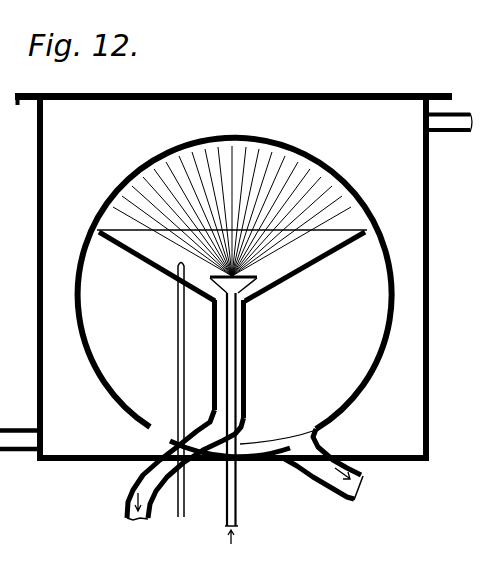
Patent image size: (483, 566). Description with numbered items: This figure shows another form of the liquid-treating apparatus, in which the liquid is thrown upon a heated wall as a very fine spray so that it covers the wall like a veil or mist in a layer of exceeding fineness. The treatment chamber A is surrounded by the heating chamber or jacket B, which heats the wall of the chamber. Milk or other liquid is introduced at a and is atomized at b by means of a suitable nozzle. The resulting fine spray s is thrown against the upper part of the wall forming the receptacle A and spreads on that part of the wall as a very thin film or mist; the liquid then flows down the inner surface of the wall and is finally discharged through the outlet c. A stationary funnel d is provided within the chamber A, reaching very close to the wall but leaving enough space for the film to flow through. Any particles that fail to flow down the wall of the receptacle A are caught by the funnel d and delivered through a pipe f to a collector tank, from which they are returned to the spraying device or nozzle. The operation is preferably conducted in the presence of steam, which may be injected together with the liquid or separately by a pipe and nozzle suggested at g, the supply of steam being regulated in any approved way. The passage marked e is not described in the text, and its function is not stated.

The treatment chamber A is at (235, 297).
The heating chamber B is at (236, 276).
The liquid inlet a is at (249, 388).
The nozzle b is at (213, 284).
The outlet c is at (358, 486).
The stationary funnel d is at (290, 266).
The discharge pipe e is at (162, 450).
The pipe f is at (127, 502).
The steam pipe and nozzle g is at (181, 368).
The fine spray s is at (232, 211).